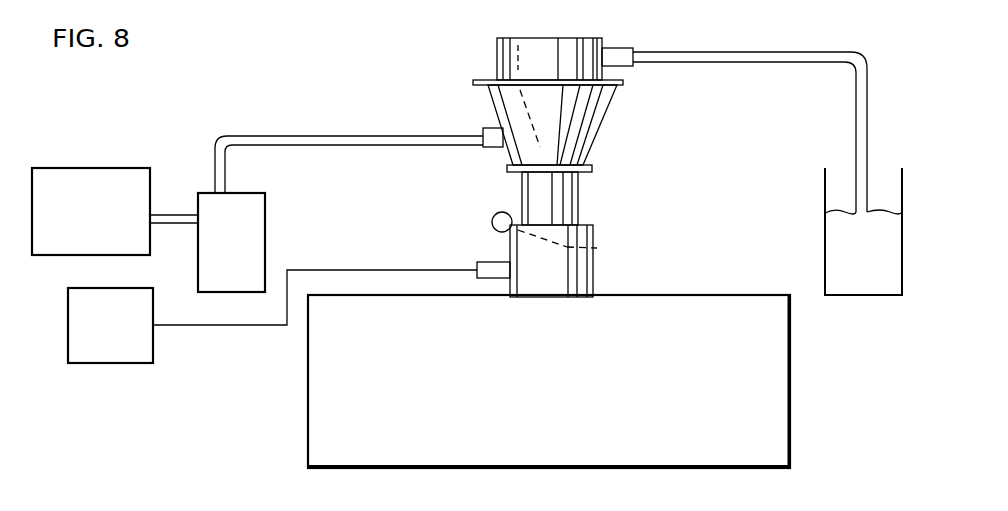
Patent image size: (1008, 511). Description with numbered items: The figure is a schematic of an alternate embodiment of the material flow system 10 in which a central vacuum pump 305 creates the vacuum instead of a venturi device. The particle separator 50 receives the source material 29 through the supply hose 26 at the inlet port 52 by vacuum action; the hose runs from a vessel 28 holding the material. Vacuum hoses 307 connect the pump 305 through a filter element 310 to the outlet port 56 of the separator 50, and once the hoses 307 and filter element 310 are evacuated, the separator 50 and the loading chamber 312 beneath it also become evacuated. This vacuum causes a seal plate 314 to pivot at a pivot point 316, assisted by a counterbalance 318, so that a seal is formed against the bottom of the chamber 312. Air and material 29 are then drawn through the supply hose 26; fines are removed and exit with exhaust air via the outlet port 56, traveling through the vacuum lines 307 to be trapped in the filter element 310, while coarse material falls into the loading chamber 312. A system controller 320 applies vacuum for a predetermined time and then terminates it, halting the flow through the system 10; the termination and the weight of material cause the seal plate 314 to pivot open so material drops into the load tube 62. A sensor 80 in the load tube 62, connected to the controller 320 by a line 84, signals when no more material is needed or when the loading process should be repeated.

The material flow system 10 is at (180, 85).
The supply hose 26 is at (809, 51).
The receiving vessel 28 is at (883, 297).
The source material 29 is at (833, 229).
The particle separator 50 is at (497, 52).
The inlet port 52 is at (624, 47).
The outlet port 56 is at (483, 128).
The load tube 62 is at (593, 270).
The sensor 80 is at (477, 264).
The control line 84 is at (328, 269).
The central vacuum pump 305 is at (102, 175).
The vacuum hoses 307 is at (178, 214).
The filter element 310 is at (253, 208).
The loading chamber 312 is at (578, 195).
The seal plate 314 is at (597, 248).
The pivot point 316 is at (512, 245).
The counterbalance 318 is at (492, 213).
The system controller 320 is at (140, 364).